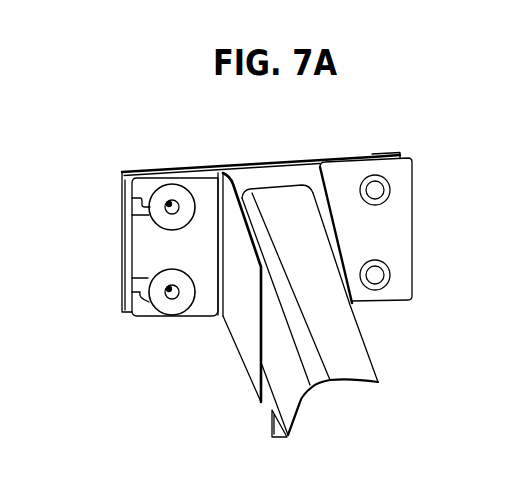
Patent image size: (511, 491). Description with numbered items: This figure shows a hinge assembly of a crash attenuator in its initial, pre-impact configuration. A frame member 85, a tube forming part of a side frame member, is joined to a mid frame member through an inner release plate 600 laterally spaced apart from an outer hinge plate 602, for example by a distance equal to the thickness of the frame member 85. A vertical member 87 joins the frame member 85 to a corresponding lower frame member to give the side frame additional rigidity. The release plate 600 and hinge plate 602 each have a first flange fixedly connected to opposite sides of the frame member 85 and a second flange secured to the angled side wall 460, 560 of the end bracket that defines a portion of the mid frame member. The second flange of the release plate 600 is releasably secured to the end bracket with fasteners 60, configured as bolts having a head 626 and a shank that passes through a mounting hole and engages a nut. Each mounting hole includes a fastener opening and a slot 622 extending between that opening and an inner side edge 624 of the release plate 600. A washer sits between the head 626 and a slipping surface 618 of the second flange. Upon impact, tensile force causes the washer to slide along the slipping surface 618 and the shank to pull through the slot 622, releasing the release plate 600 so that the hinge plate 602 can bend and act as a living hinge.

The fastener 60 is at (169, 201).
The frame member 85 is at (330, 272).
The vertical member 87 is at (272, 428).
The side wall 460 is at (318, 245).
The outer side wall 560 is at (285, 182).
The inner release plate 600 is at (128, 188).
The outer hinge plate 602 is at (368, 170).
The slipping surface 618 is at (262, 188).
The slot 622 is at (133, 207).
The inner side edge 624 is at (130, 248).
The head 626 is at (183, 193).